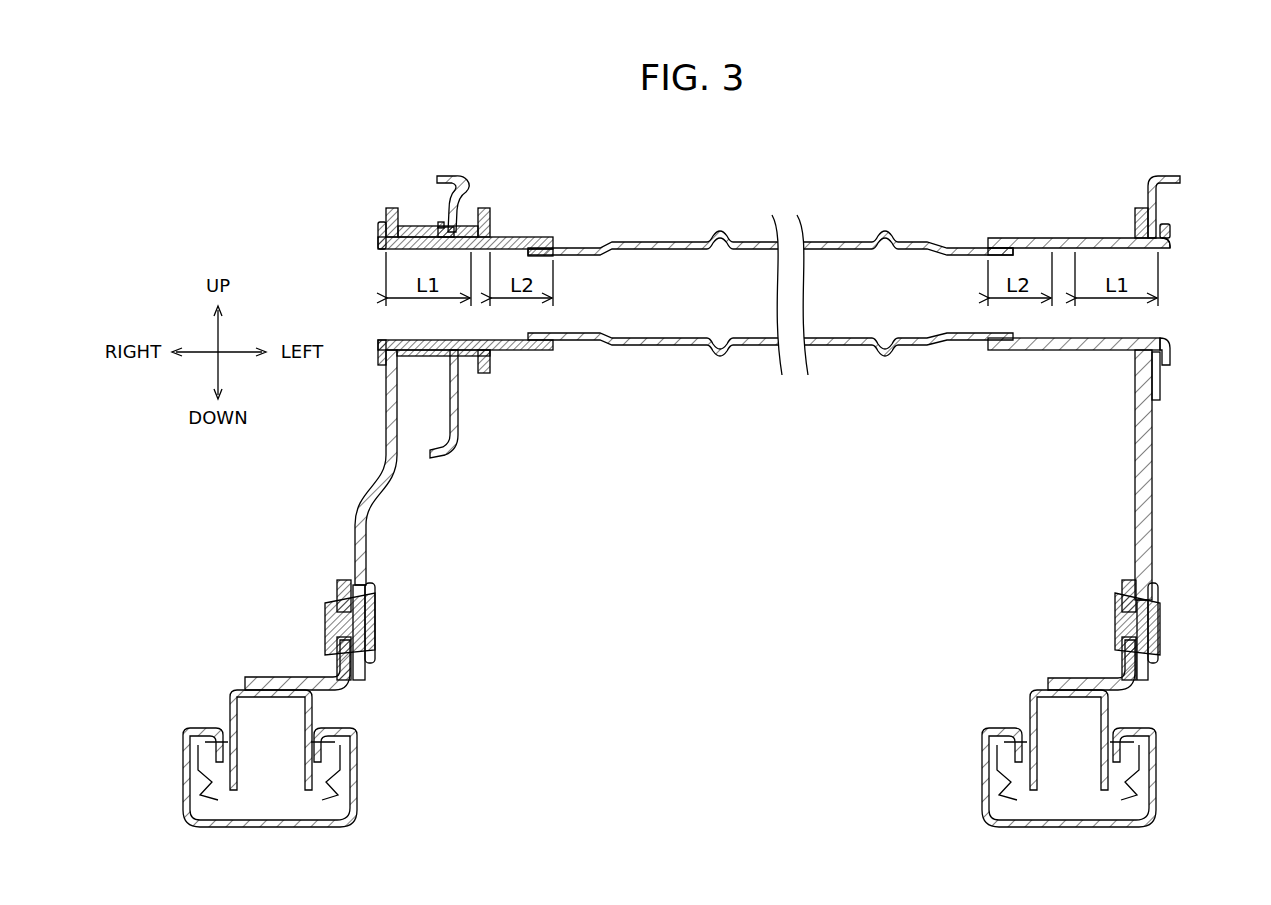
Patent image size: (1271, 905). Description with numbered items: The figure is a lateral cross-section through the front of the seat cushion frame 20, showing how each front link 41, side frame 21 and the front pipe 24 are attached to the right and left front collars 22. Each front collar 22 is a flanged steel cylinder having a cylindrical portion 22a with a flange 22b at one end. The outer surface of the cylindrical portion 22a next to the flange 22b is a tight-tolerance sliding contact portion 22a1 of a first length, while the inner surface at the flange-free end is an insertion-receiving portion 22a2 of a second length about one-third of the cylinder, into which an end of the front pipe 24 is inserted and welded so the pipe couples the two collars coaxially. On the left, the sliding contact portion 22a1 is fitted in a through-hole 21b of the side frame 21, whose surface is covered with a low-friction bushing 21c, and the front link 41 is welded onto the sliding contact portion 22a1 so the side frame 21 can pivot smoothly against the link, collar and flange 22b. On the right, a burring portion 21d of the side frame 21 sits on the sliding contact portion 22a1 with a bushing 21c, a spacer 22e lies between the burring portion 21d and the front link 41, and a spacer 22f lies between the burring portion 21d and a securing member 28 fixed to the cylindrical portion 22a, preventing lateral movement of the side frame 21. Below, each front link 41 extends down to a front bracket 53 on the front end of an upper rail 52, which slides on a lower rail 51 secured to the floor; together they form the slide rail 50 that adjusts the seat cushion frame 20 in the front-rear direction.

The seat cushion frame 20 is at (770, 258).
The side frame 21 is at (796, 192).
The through-hole 21b is at (1168, 246).
The bushing 21c is at (438, 224).
The burring portion 21d is at (444, 226).
The front collar 22 is at (753, 329).
The cylindrical portion 22a is at (520, 238).
The sliding contact portion 22a1 is at (418, 230).
The insertion-receiving portion 22a2 is at (525, 254).
The flange 22b is at (378, 232).
The spacer 22e is at (418, 360).
The spacer 22f is at (463, 358).
The front pipe 24 is at (672, 242).
The securing member 28 is at (490, 366).
The front link 41 is at (378, 486).
The slide rail 50 is at (669, 758).
The lower rail 51 is at (358, 754).
The upper rail 52 is at (315, 707).
The front bracket 53 is at (342, 658).